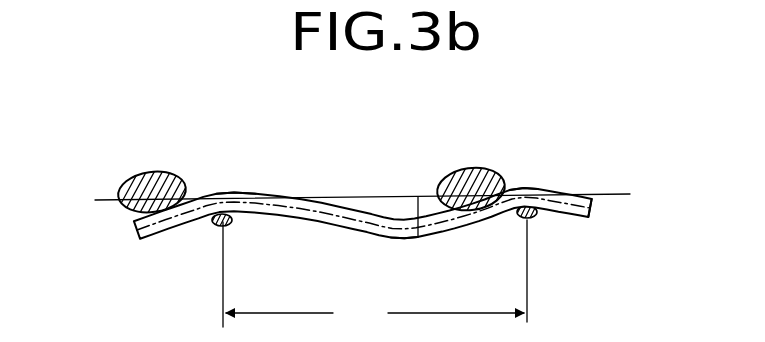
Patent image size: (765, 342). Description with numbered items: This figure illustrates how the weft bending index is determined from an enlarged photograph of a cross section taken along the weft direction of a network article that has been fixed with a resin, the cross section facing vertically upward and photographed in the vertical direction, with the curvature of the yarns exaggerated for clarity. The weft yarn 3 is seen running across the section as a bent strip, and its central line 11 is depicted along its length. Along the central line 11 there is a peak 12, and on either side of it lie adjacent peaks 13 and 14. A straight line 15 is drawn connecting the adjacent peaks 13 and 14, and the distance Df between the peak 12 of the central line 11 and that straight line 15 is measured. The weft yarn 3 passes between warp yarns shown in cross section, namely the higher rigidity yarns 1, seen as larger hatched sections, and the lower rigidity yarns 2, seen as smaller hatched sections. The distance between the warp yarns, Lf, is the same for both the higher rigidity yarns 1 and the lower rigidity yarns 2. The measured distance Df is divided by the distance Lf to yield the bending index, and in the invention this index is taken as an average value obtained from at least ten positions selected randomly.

The higher rigidity yarn 1 is at (143, 177).
The lower rigidity yarn 2 is at (213, 228).
The weft yarn 3 is at (592, 202).
The central line 11 is at (593, 220).
The peak 12 is at (415, 238).
The peak 13 is at (233, 190).
The peak 14 is at (530, 196).
The straight line 15 is at (346, 200).
The distance between peak and straight line Df is at (415, 213).
The distance between the warp yarns Lf is at (375, 273).